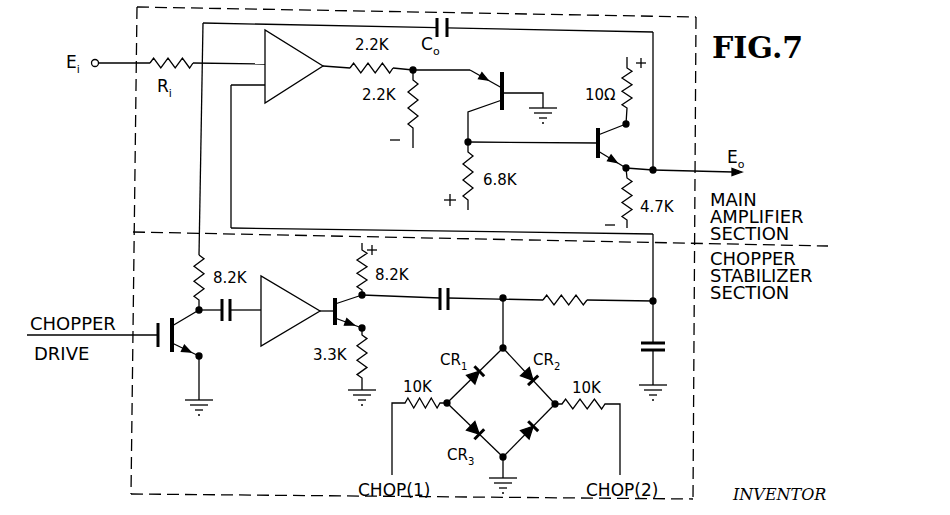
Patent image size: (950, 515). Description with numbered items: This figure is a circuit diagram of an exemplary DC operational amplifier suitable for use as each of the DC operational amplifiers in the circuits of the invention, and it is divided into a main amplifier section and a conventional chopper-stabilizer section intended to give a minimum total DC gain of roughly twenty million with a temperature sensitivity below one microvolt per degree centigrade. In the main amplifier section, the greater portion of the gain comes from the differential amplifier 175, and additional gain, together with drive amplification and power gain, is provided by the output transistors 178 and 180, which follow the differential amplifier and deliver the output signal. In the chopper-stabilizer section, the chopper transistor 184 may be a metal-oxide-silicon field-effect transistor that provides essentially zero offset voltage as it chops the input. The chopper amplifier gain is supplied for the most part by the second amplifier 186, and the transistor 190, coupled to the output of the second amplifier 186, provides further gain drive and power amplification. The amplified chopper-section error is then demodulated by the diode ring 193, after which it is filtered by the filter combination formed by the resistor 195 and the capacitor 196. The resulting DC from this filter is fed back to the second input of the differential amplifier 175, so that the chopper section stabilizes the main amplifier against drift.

The differential amplifier 175 is at (283, 100).
The output transistor 178 is at (505, 82).
The output transistor 180 is at (609, 159).
The chopper transistor 184 is at (201, 360).
The second amplifier 186 is at (265, 345).
The transistor 190 is at (366, 331).
The diode ring 193 is at (541, 418).
The resistor 195 is at (565, 296).
The capacitor 196 is at (640, 345).